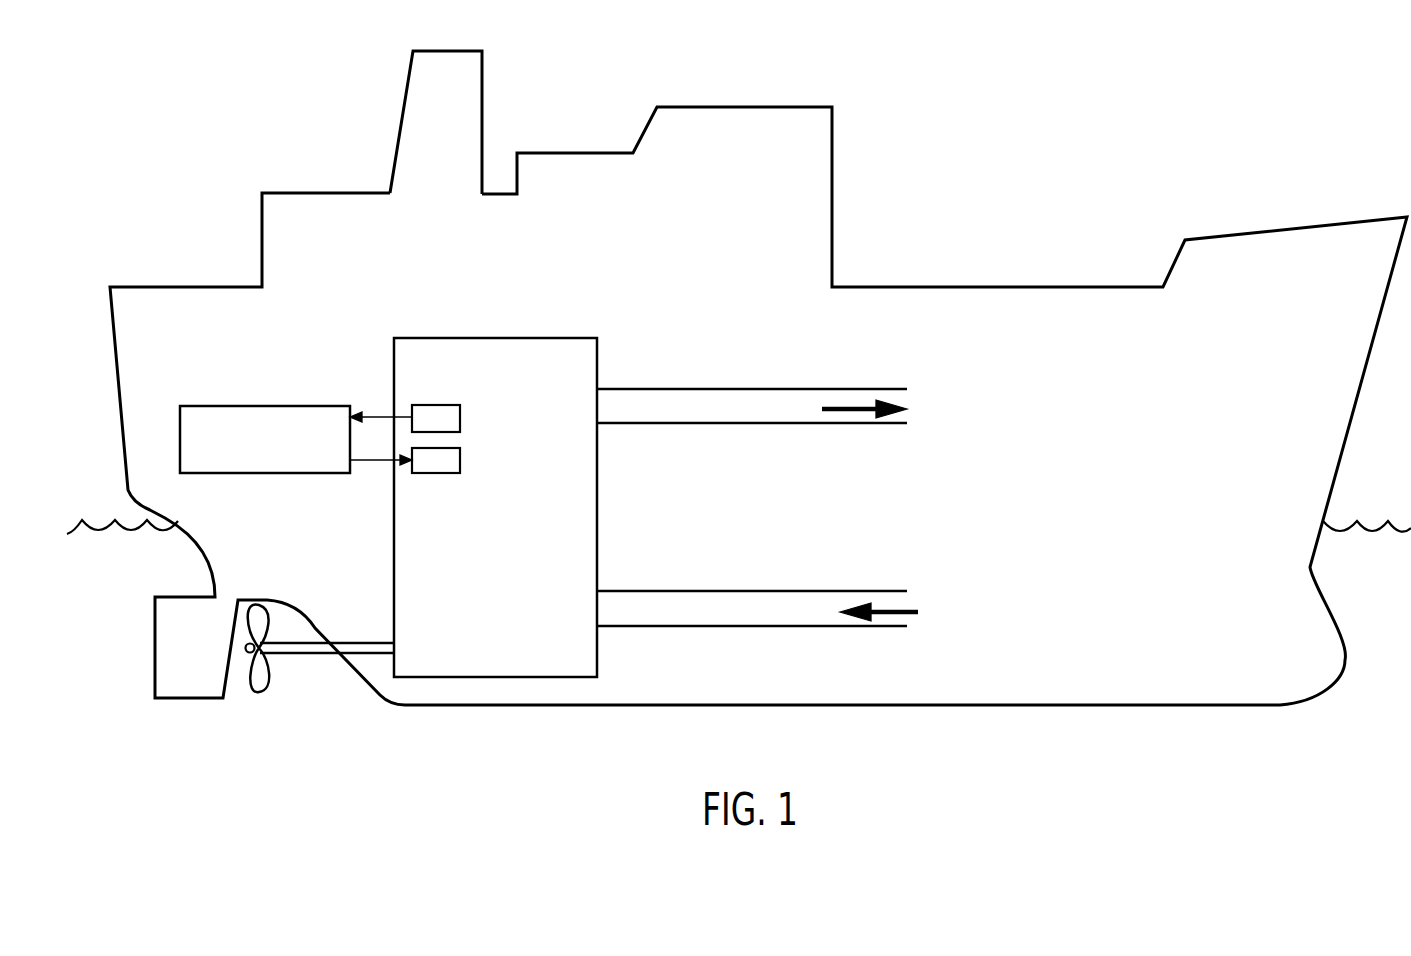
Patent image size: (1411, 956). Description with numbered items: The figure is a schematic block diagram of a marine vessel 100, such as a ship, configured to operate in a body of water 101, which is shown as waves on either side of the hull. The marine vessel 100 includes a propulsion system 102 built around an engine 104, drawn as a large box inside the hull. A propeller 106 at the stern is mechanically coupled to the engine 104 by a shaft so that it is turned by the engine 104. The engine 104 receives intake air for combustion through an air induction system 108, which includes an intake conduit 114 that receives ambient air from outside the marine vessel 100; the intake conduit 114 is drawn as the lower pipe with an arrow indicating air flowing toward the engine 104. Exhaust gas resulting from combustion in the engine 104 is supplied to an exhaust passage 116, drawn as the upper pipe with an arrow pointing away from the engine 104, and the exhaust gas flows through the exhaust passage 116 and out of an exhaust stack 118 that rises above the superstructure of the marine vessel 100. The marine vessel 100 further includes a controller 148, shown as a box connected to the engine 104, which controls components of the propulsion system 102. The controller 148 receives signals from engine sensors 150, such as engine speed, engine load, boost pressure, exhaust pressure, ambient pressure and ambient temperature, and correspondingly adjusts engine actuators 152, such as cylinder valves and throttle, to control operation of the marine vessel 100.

The marine vessel 100 is at (993, 125).
The body of water 101 is at (128, 585).
The propulsion system 102 is at (386, 308).
The engine 104 is at (511, 532).
The propeller 106 is at (258, 692).
The air induction system 108 is at (898, 537).
The intake conduit 114 is at (730, 591).
The exhaust passage 116 is at (663, 389).
The exhaust stack 118 is at (400, 110).
The controller 148 is at (281, 463).
The engine sensors 150 is at (405, 418).
The engine actuators 152 is at (405, 460).